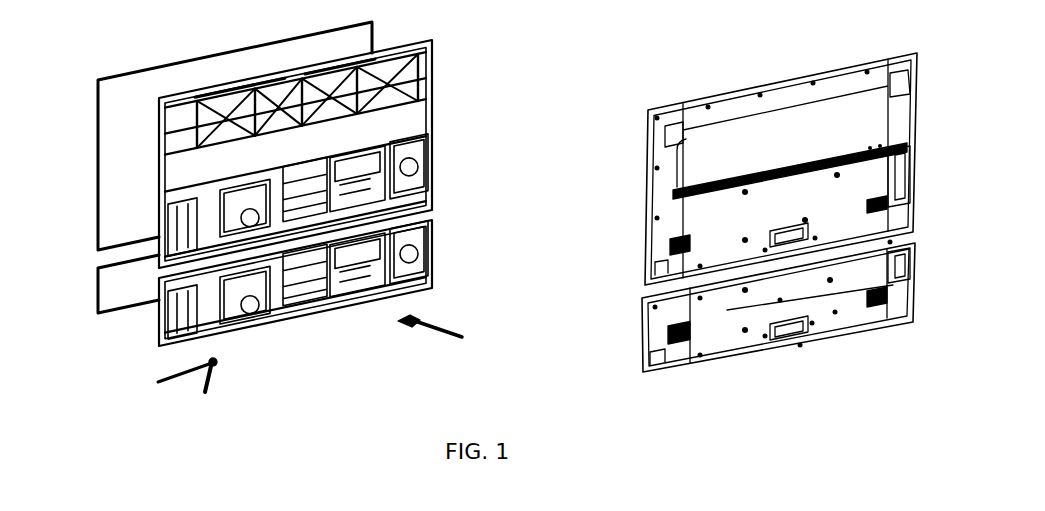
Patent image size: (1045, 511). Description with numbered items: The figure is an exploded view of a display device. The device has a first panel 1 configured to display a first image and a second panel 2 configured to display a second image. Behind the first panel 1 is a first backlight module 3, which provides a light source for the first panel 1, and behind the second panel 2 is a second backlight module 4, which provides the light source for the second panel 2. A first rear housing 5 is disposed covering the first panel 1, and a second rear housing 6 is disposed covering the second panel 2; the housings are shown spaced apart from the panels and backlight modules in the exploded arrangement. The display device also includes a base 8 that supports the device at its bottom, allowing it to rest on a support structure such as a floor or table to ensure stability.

The first panel 1 is at (134, 101).
The second panel 2 is at (122, 289).
The first backlight module 3 is at (407, 105).
The second backlight module 4 is at (397, 257).
The first rear housing 5 is at (732, 140).
The second rear housing 6 is at (700, 318).
The base 8 is at (218, 368).